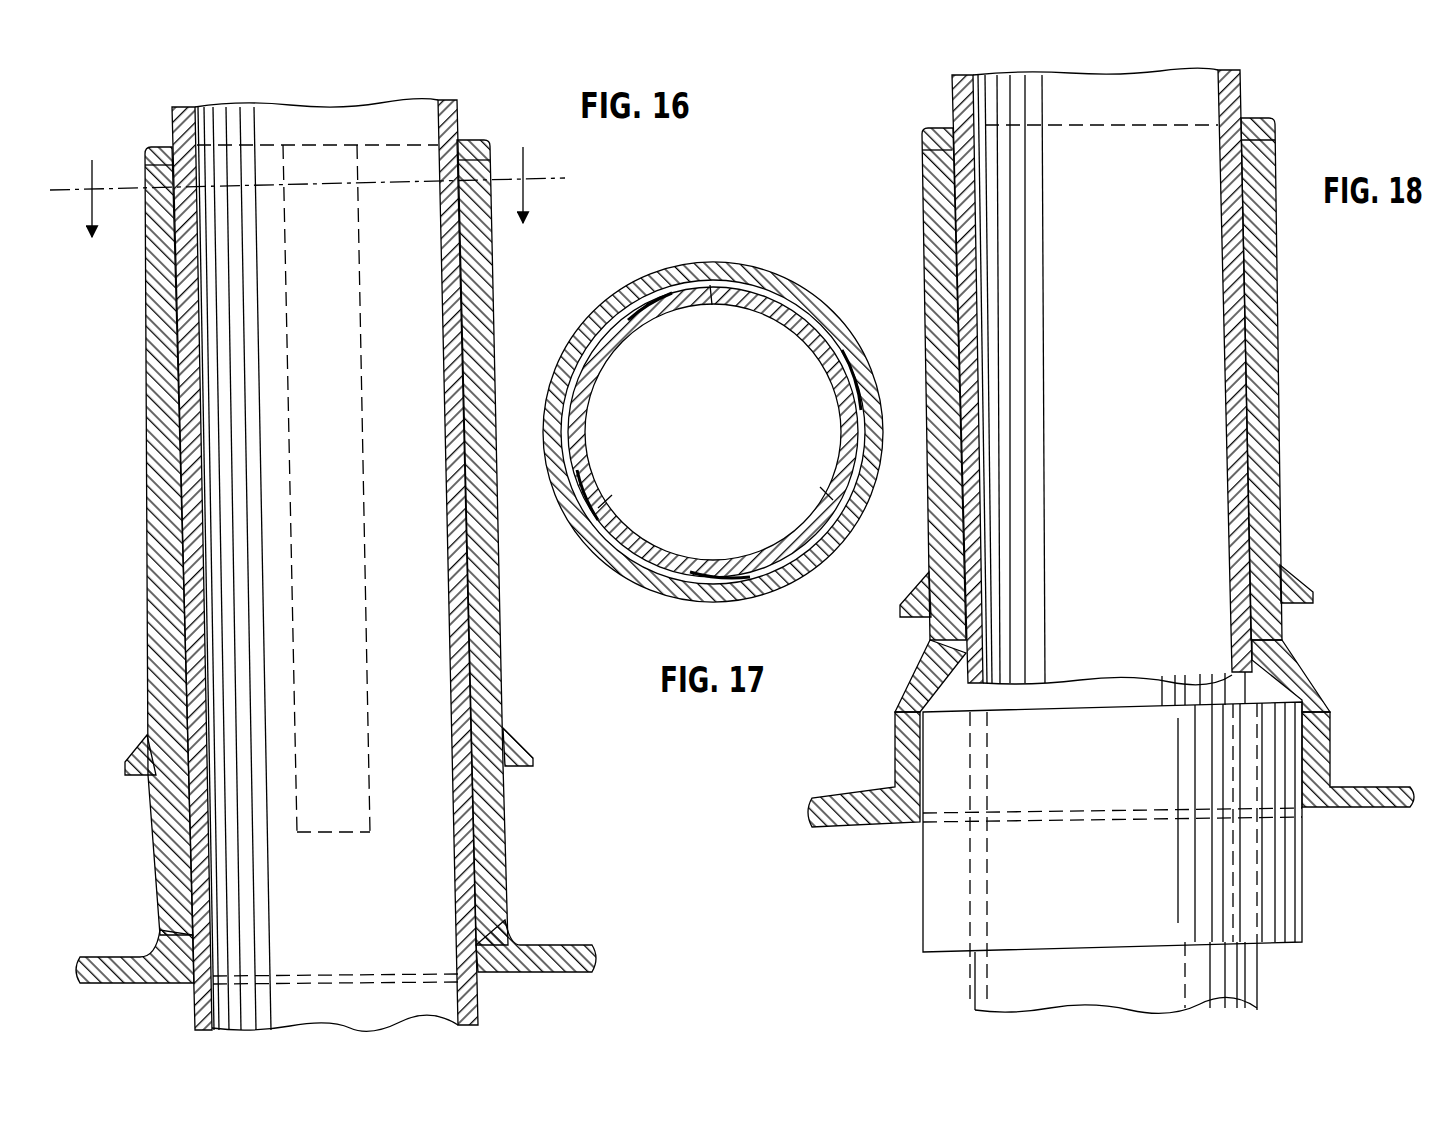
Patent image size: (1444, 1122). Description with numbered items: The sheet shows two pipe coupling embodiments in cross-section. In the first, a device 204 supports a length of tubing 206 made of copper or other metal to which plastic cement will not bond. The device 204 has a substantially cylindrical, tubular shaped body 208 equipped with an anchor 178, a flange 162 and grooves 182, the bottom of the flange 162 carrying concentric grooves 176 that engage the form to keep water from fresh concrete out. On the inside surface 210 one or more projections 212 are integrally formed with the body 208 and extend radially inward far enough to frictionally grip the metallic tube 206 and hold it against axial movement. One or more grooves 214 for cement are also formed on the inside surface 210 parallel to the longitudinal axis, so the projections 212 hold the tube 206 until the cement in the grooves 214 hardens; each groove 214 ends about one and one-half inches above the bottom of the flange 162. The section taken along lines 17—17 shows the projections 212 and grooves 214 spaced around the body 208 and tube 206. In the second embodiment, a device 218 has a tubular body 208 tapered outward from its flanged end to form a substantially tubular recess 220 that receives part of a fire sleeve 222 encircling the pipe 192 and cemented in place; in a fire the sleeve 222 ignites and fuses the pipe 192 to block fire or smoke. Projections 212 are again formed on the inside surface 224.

In FIG. 16, the section lines 17— 17 is at (307, 192).
In FIG. 16, the flange 162 is at (530, 948).
In FIG. 18, the flange 162 is at (1340, 785).
In FIG. 16, the concentric grooves 176 is at (128, 985).
In FIG. 16, the anchor 178 is at (150, 753).
In FIG. 18, the anchor 178 is at (1292, 590).
In FIG. 16, the grooves 182 is at (502, 630).
In FIG. 18, the grooves 182 is at (1280, 350).
In FIG. 16, the plastic piping 192 is at (183, 432).
In FIG. 17, the plastic piping 192 is at (633, 553).
In FIG. 18, the plastic piping 192 is at (1232, 234).
In FIG. 16, the device 204 is at (130, 335).
In FIG. 16, the tubing 206 is at (445, 102).
In FIG. 16, the tubular shaped body 208 is at (157, 532).
In FIG. 17, the tubular shaped body 208 is at (792, 290).
In FIG. 16, the inside surface 210 is at (460, 698).
In FIG. 16, the projections 212 is at (167, 173).
In FIG. 17, the projections 212 is at (590, 353).
In FIG. 18, the projections 212 is at (950, 152).
In FIG. 16, the grooves for cement 214 is at (290, 492).
In FIG. 17, the grooves for cement 214 is at (710, 297).
In FIG. 18, the device 218 is at (1297, 305).
In FIG. 18, the recess 220 is at (940, 690).
In FIG. 18, the fire sleeve 222 is at (1066, 770).
In FIG. 18, the inside surface 224 is at (1245, 452).